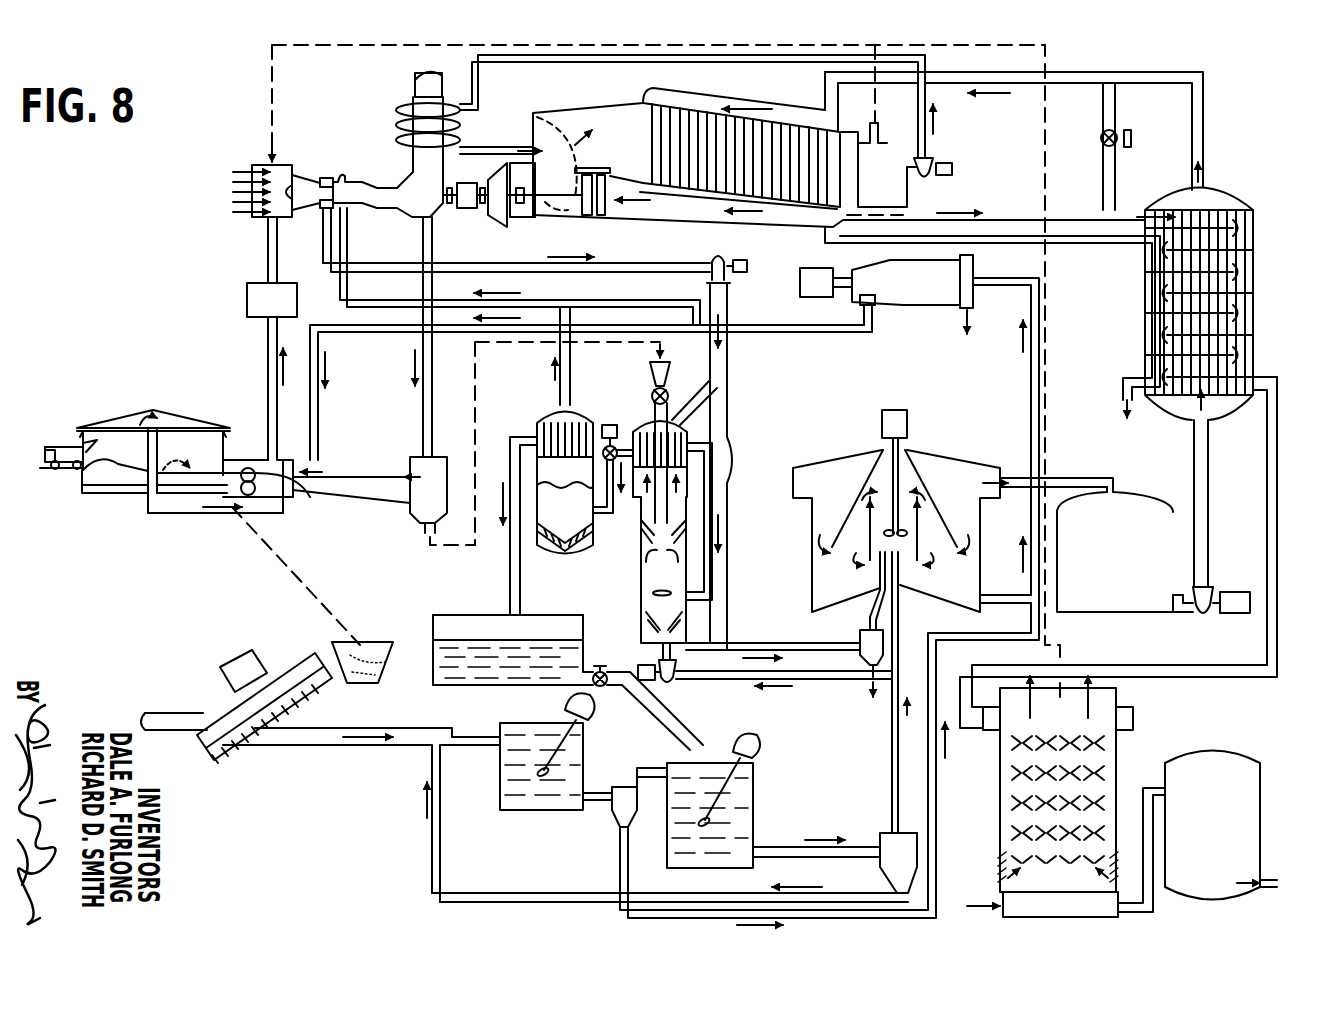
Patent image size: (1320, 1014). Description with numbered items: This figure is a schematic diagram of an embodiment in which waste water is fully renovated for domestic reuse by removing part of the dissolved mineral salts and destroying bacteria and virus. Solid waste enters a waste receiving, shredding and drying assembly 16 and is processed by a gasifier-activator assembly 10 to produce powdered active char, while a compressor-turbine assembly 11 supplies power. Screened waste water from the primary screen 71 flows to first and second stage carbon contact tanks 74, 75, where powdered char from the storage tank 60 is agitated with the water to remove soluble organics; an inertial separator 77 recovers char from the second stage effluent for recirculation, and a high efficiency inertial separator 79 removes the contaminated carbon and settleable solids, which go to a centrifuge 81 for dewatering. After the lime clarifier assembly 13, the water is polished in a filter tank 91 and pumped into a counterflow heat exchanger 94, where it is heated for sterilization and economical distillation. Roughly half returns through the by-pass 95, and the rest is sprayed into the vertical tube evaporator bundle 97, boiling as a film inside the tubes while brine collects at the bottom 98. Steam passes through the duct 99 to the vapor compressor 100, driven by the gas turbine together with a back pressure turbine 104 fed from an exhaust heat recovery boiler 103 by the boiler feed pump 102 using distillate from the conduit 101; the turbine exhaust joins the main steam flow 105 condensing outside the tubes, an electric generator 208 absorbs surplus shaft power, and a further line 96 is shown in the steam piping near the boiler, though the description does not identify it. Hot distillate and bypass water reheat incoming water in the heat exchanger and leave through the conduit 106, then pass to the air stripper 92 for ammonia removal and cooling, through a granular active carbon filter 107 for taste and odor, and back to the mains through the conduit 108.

The gasifier-activator assembly 10 is at (617, 366).
The compressor-turbine assembly 11 is at (372, 162).
The lime clarifier assembly 13 is at (942, 432).
The waste receiving, shredding and drying assembly 16 is at (206, 356).
The storage tank 60 is at (433, 620).
The primary screen 71 is at (243, 712).
The first stage carbon contact tank 74 is at (500, 790).
The second stage carbon contact tank 75 is at (667, 848).
The inertial separator 77 is at (880, 840).
The high efficiency inertial separator 79 is at (612, 822).
The centrifuge 81 is at (923, 308).
The filter tank 91 is at (1143, 499).
The air stripper 92 is at (1000, 797).
The counterflow heat exchanger 94 is at (1145, 315).
The by-pass 95 is at (1115, 168).
The steam conduit 96 is at (1018, 84).
The vertical tube evaporator bundle 97 is at (702, 130).
The bottom 98 is at (812, 232).
The duct 99 is at (654, 216).
The vapor compressor 100 is at (586, 216).
The conduit 101 is at (894, 172).
The boiler feed pump 102 is at (952, 170).
The exhaust heat recovery boiler 103 is at (460, 128).
The back pressure turbine 104 is at (504, 220).
The main steam flow 105 is at (602, 120).
The conduit 106 is at (1267, 515).
The granular active carbon filter 107 is at (1246, 752).
The conduit 108 is at (1280, 866).
The electric generator 208 is at (482, 213).